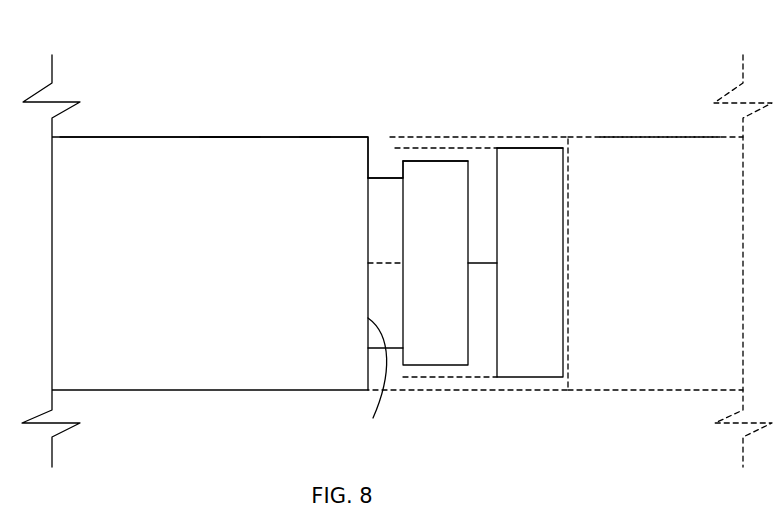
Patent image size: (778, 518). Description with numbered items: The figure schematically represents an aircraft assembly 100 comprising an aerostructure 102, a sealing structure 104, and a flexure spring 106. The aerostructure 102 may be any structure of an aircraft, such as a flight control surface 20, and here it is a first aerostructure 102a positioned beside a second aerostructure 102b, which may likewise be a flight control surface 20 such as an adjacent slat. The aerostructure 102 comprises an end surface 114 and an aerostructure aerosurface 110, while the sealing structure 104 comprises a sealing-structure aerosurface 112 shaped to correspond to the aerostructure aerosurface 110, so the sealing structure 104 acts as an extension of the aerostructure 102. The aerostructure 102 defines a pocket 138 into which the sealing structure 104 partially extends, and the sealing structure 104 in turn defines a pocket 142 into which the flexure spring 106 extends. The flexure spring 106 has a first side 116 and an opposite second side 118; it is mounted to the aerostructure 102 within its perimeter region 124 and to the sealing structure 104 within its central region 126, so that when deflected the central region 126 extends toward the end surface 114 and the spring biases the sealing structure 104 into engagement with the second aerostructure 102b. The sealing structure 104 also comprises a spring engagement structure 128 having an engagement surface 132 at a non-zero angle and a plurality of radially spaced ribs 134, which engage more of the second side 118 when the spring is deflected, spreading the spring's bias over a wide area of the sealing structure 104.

The aircraft assembly 100 is at (243, 50).
The aerostructure 102 is at (132, 134).
The first aerostructure 102a is at (186, 133).
The second aerostructure 102b is at (665, 133).
The flight control surface 20 is at (245, 121).
The aerostructure aerosurface 110 is at (317, 134).
The sealing-structure aerosurface 112 is at (545, 138).
The pocket 142 is at (410, 154).
The perimeter region 124 is at (400, 167).
The flexure spring 106 is at (434, 160).
The sealing structure 104 is at (514, 147).
The engagement surface 132 is at (437, 262).
The ribs 134 is at (460, 263).
The second side 118 is at (472, 245).
The first side 116 is at (400, 213).
The central region 126 is at (395, 277).
The spring engagement structure 128 is at (442, 282).
The end surface 114 is at (370, 382).
The pocket 138 is at (515, 383).